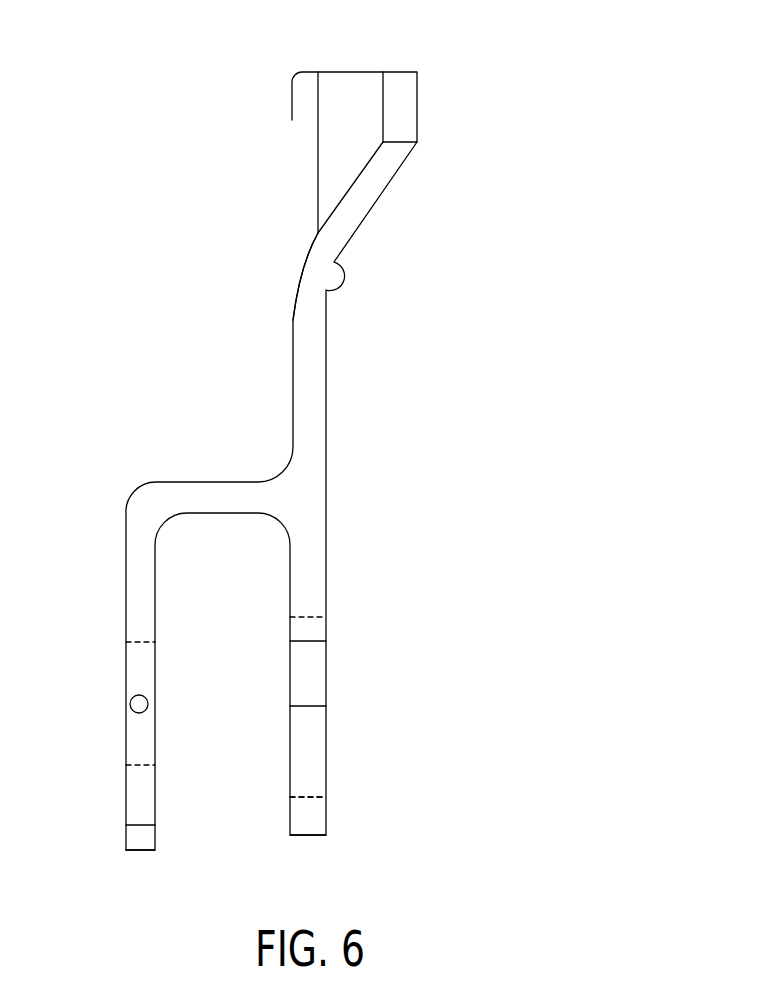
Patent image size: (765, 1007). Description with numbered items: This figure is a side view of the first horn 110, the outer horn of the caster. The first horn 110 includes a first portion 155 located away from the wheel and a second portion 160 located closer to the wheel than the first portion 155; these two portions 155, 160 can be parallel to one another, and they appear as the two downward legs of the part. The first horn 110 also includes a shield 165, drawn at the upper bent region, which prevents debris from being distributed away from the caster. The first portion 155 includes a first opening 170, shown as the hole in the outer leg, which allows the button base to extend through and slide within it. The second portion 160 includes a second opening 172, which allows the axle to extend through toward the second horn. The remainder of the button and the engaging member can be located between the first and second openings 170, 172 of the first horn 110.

The first horn 110 is at (492, 176).
The first portion 155 is at (122, 580).
The second portion 160 is at (318, 560).
The shield 165 is at (305, 233).
The first opening 170 is at (125, 688).
The second opening 172 is at (315, 768).